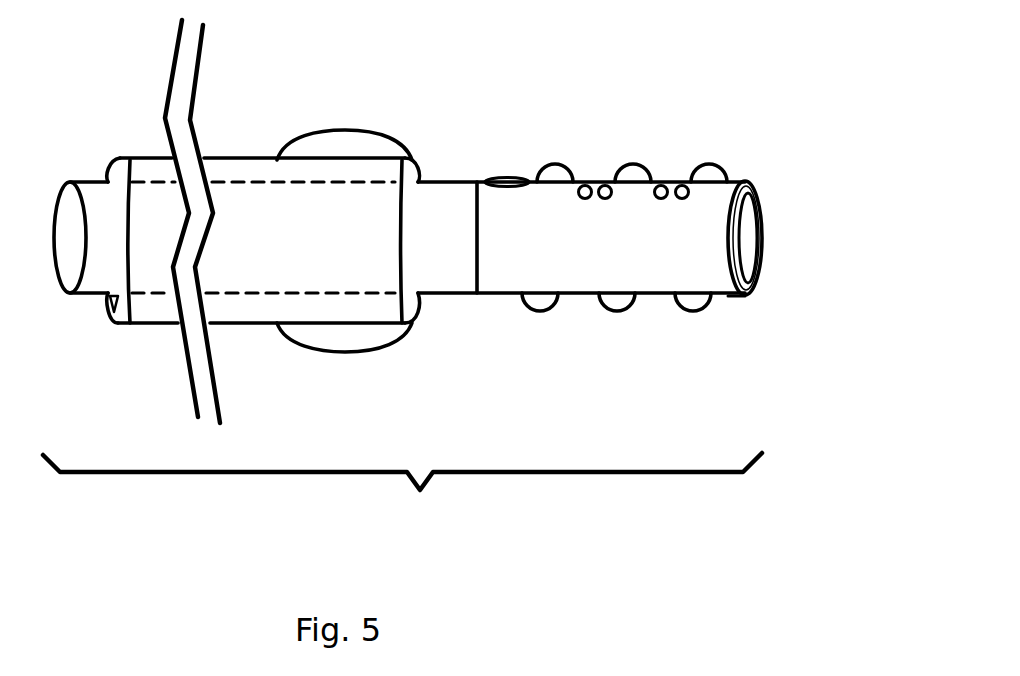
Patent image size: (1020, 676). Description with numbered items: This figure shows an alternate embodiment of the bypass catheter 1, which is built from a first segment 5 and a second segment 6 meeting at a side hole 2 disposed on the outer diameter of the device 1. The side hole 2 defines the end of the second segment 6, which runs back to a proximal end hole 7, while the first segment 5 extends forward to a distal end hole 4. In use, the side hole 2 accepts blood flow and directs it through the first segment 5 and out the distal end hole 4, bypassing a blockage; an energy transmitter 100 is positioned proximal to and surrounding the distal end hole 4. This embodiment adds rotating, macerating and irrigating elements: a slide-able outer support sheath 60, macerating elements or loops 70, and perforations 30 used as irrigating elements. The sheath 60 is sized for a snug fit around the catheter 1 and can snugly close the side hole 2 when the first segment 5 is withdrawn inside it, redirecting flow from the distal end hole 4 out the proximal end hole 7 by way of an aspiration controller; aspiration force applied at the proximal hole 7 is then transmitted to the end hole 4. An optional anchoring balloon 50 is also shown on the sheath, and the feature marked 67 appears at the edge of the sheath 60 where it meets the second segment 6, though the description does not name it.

The bypass catheter 1 is at (417, 542).
The side hole 2 is at (508, 177).
The distal end hole 4 is at (747, 226).
The first segment 5 is at (727, 297).
The second segment 6 is at (92, 181).
The proximal end hole 7 is at (62, 212).
The perforations 30 is at (592, 178).
The anchoring balloon 50 is at (332, 132).
The slide-able outer support sheath 60 is at (155, 327).
The sleeve edge 67 is at (107, 303).
The macerating elements or loops 70 is at (558, 163).
The energy transmitter 100 is at (753, 180).